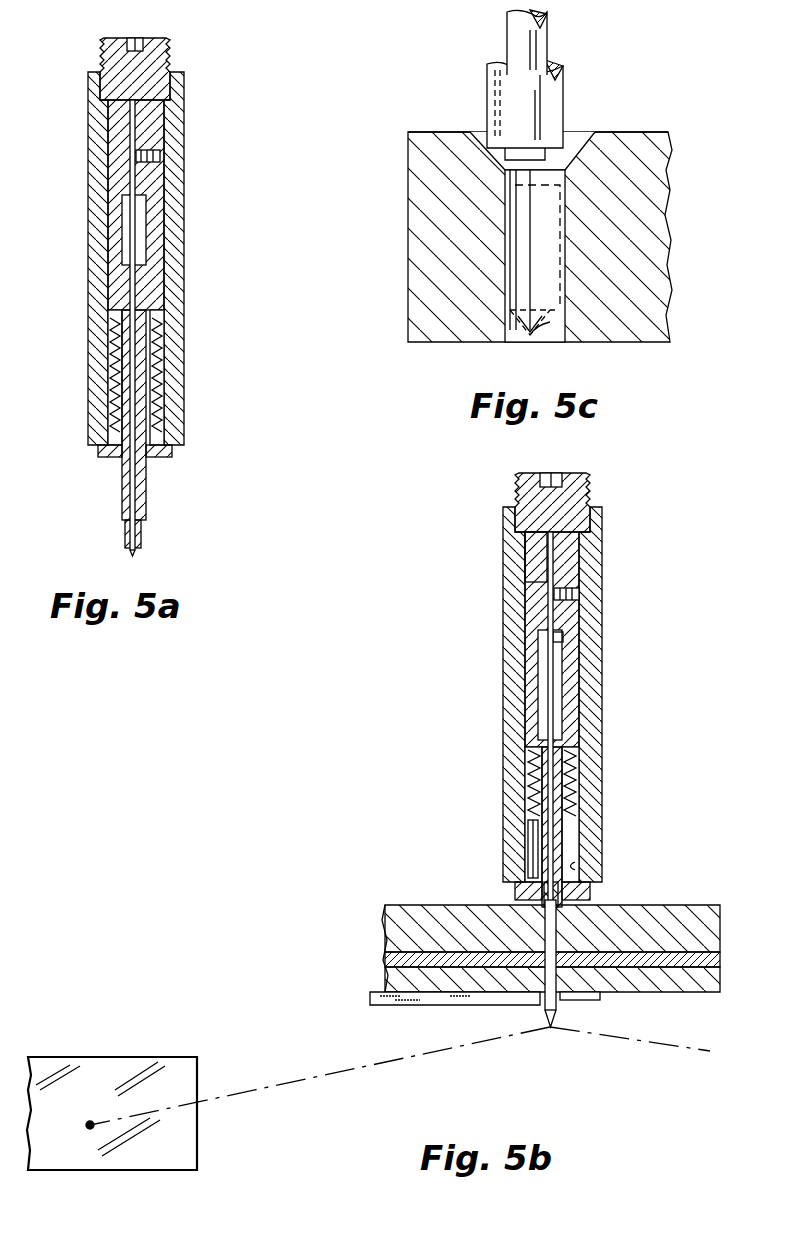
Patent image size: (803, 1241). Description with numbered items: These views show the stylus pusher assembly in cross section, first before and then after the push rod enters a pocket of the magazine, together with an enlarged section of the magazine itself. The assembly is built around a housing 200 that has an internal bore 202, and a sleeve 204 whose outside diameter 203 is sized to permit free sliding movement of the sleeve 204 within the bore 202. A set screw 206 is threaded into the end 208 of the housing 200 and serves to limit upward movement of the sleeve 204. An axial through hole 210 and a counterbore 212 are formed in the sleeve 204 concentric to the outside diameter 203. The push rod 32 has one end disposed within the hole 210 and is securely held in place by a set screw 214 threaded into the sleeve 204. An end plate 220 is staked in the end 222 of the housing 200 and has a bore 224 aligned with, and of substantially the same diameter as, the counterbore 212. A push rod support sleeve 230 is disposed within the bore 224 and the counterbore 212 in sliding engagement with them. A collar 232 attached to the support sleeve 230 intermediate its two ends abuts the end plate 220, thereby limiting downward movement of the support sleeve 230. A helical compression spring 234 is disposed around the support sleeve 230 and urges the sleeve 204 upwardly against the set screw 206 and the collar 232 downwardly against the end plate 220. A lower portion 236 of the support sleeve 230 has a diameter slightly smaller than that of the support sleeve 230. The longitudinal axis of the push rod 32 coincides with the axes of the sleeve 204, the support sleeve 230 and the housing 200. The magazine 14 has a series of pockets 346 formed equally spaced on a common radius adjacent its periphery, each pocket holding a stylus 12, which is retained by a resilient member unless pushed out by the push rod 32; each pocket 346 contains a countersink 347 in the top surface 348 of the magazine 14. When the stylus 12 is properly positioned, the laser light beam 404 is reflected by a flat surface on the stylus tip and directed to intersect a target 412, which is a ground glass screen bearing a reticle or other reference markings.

In FIG. 5c, the stylus 12 is at (546, 322).
In FIG. 5b, the stylus 12 is at (556, 1025).
In FIG. 5c, the magazine 14 is at (422, 192).
In FIG. 5b, the magazine 14 is at (390, 932).
In FIG. 5a, the push rod 32 is at (128, 549).
In FIG. 5c, the push rod 32 is at (507, 42).
In FIG. 5b, the push rod 32 is at (548, 590).
In FIG. 5a, the housing 200 is at (180, 372).
In FIG. 5b, the housing 200 is at (605, 674).
In FIG. 5b, the internal bore 202 is at (582, 872).
In FIG. 5a, the outside diameter 203 is at (140, 300).
In FIG. 5b, the outside diameter 203 is at (526, 652).
In FIG. 5a, the sleeve 204 is at (150, 180).
In FIG. 5b, the sleeve 204 is at (576, 552).
In FIG. 5a, the set screw 206 is at (166, 60).
In FIG. 5b, the set screw 206 is at (520, 478).
In FIG. 5b, the end 208 is at (594, 508).
In FIG. 5b, the axial through hole 210 is at (522, 560).
In FIG. 5b, the counterbore 212 is at (562, 642).
In FIG. 5b, the set screw 214 is at (580, 598).
In FIG. 5a, the end plate 220 is at (110, 460).
In FIG. 5b, the end plate 220 is at (515, 900).
In FIG. 5b, the end 222 is at (524, 878).
In FIG. 5b, the bore 224 is at (562, 903).
In FIG. 5a, the push rod support sleeve 230 is at (147, 500).
In FIG. 5b, the push rod support sleeve 230 is at (564, 842).
In FIG. 5b, the collar 232 is at (530, 816).
In FIG. 5b, the helical compression spring 234 is at (578, 768).
In FIG. 5a, the lower portion 236 is at (142, 538).
In FIG. 5c, the lower portion 236 is at (562, 96).
In FIG. 5c, the pockets 346 is at (532, 343).
In FIG. 5c, the countersink 347 is at (586, 132).
In FIG. 5c, the top surface 348 is at (456, 132).
In FIG. 5b, the laser light beam 404 is at (352, 1068).
In FIG. 5b, the target 412 is at (195, 1140).